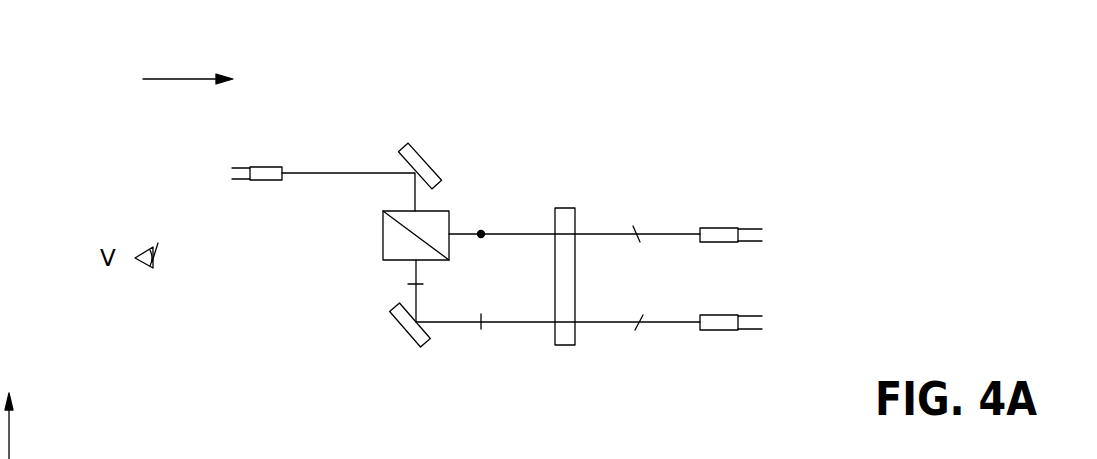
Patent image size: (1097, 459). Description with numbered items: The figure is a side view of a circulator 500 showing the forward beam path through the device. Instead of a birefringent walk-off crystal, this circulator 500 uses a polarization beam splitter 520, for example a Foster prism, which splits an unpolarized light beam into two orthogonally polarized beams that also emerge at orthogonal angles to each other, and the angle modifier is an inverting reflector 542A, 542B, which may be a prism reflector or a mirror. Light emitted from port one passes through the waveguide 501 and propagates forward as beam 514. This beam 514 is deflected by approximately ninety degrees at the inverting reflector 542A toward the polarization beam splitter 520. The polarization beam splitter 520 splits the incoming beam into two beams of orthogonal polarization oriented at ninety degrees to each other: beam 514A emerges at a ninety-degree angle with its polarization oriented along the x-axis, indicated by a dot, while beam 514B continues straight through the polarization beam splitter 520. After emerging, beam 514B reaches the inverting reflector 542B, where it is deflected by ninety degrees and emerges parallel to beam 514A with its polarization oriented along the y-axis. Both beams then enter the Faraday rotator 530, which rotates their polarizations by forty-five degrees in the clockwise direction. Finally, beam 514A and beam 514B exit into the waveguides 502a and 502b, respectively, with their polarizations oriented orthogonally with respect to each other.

The circulator 500 is at (697, 105).
The waveguide 501 is at (263, 166).
The beam 514 is at (335, 168).
The beam 514A is at (502, 232).
The beam 514B is at (412, 296).
The polarization beam splitter 520 is at (382, 223).
The Faraday rotator 530 is at (565, 207).
The inverting reflector 542A is at (429, 152).
The inverting reflector 542B is at (425, 348).
The waveguide 502a is at (751, 222).
The waveguide 502b is at (751, 311).